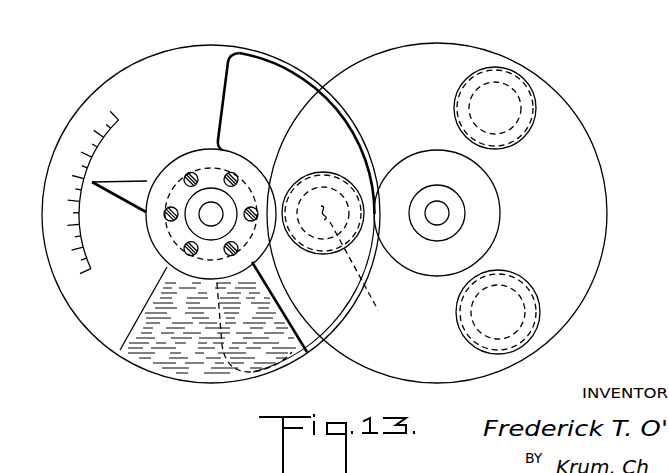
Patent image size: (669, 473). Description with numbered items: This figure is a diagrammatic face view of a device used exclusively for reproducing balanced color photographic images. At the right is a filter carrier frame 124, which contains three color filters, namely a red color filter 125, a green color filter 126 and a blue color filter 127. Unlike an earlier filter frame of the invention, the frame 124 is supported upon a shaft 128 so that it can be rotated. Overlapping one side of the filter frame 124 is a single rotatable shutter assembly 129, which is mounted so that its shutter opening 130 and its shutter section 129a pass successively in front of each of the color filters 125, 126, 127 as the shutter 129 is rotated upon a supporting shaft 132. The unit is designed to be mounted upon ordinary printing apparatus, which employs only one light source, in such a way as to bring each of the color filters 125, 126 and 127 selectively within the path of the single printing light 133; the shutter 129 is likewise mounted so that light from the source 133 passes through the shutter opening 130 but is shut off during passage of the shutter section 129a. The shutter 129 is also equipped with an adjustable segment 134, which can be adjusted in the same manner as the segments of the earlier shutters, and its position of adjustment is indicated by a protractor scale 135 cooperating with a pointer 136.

The filter carrier frame 124 is at (590, 207).
The red color filter 125 is at (523, 125).
The green color filter 126 is at (526, 281).
The blue color filter 127 is at (337, 155).
The shaft 128 is at (438, 225).
The rotatable shutter assembly 129 is at (194, 70).
The shutter section 129a is at (150, 74).
The shutter opening 130 is at (249, 72).
The supporting shaft 132 is at (200, 222).
The printing light 133 is at (364, 278).
The adjustable segment 134 is at (250, 337).
The protractor scale 135 is at (90, 181).
The pointer 136 is at (131, 185).